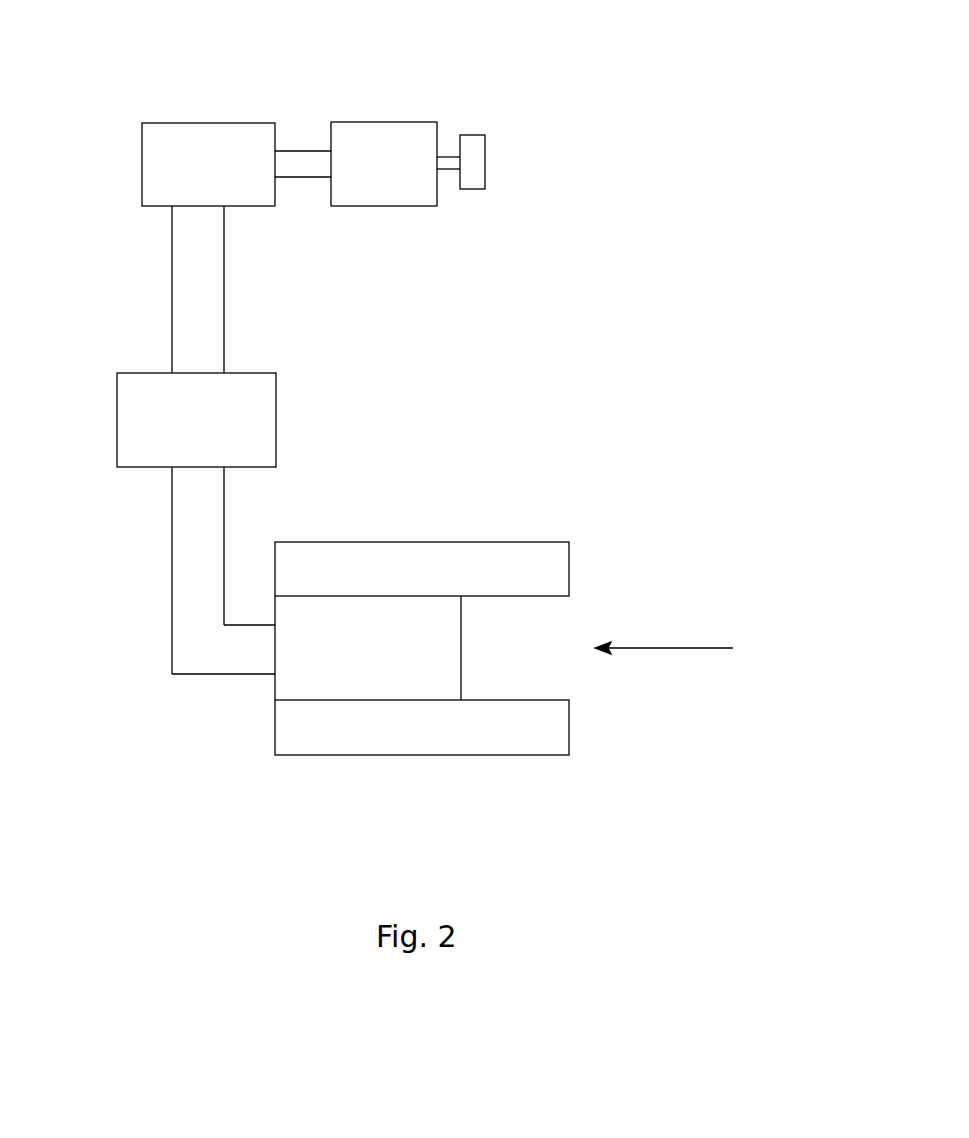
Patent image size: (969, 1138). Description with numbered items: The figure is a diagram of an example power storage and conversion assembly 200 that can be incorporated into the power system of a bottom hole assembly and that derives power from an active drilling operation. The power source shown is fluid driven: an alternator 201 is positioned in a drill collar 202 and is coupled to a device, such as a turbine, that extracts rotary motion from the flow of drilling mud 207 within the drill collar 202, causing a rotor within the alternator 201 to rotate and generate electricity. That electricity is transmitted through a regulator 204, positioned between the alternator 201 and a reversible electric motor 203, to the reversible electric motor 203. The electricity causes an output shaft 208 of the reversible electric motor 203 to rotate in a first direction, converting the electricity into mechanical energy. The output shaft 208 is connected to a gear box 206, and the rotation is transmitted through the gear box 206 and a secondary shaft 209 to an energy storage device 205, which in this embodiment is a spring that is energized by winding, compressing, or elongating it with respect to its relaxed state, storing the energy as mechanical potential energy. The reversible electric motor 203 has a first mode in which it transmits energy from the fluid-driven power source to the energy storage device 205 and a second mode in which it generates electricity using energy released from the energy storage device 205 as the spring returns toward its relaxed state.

The power storage and conversion assembly 200 is at (740, 100).
The alternator 201 is at (295, 683).
The drill collar 202 is at (463, 542).
The reversible electric motor 203 is at (162, 123).
The regulator 204 is at (137, 373).
The energy storage device 205 is at (472, 135).
The gear box 206 is at (377, 122).
The flow of drilling mud 207 is at (668, 648).
The output shaft 208 is at (303, 151).
The secondary shaft 209 is at (453, 152).